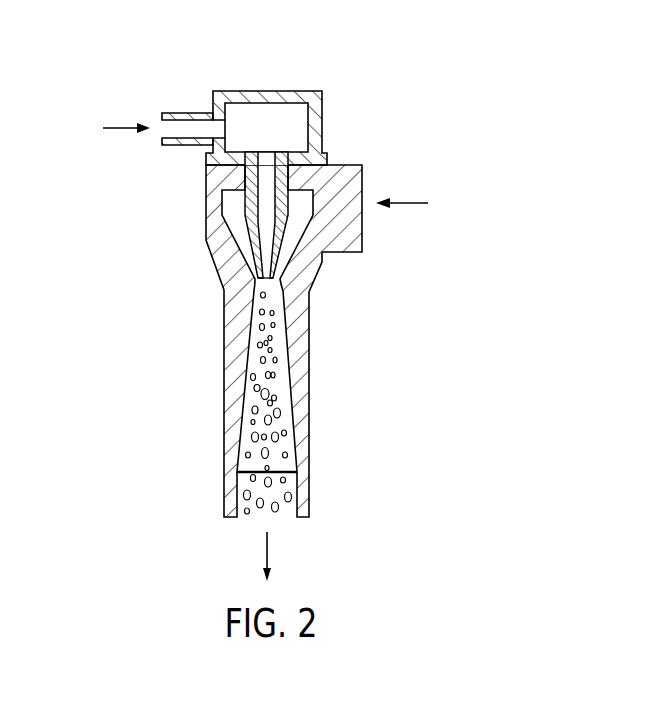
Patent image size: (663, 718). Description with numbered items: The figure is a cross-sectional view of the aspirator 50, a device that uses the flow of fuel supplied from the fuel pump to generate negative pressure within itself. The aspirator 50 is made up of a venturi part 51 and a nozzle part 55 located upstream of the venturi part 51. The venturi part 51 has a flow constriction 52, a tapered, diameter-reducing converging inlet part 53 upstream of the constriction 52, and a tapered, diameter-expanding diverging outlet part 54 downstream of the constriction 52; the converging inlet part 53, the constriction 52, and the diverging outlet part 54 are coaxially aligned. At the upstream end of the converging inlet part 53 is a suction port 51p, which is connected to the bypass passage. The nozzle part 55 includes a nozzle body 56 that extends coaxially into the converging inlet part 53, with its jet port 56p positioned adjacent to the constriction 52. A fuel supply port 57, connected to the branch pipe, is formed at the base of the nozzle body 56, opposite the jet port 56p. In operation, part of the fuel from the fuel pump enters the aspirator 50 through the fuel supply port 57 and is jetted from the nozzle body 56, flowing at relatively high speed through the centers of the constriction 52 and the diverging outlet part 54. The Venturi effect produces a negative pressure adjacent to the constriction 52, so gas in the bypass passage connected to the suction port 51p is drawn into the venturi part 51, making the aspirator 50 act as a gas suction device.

The aspirator 50 is at (360, 109).
The venturi part 51 is at (326, 430).
The suction port 51p is at (347, 203).
The flow constriction 52 is at (249, 288).
The converging inlet part 53 is at (236, 234).
The diverging outlet part 54 is at (240, 447).
The nozzle part 55 is at (230, 85).
The nozzle body 56 is at (269, 192).
The jet port 56p is at (278, 307).
The fuel supply port 57 is at (171, 126).